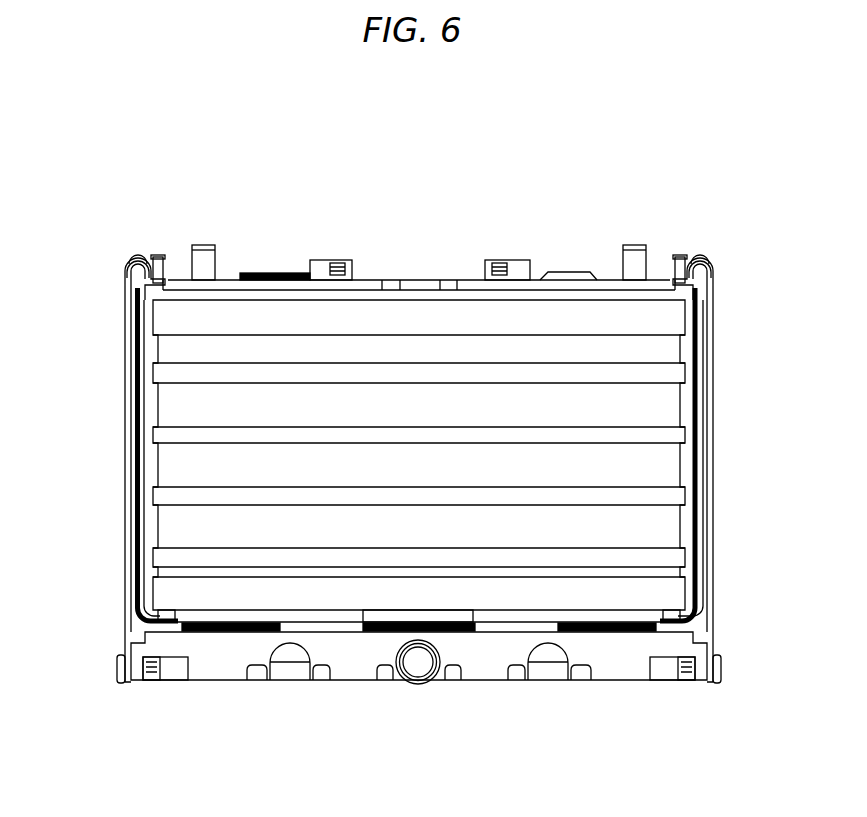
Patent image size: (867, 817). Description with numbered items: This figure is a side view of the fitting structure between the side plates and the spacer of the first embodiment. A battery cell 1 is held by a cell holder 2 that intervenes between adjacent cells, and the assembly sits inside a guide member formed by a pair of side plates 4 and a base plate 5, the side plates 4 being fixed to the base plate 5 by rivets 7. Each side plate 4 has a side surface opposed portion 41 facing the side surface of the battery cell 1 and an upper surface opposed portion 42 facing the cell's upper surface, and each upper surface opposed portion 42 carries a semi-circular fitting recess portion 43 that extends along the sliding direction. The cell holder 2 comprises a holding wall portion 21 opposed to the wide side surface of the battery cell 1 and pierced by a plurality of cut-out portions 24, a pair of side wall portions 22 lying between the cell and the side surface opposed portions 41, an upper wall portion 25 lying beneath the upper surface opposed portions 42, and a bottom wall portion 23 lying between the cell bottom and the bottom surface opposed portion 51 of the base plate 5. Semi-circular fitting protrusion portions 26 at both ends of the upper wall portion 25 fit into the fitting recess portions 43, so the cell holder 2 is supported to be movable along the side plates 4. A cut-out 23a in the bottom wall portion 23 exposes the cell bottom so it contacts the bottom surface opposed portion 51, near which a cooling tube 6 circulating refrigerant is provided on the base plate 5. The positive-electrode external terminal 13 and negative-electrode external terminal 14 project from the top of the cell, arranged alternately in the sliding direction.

The battery cell 1 is at (567, 276).
The cell holder 2 is at (467, 278).
The side plate 4 is at (122, 348).
The base plate 5 is at (618, 672).
The cooling tube 6 is at (420, 686).
The rivet 7 is at (116, 668).
The positive-electrode external terminal 13 is at (607, 278).
The negative-electrode external terminal 14 is at (230, 276).
The holding wall portion 21 is at (415, 455).
The side wall portion 22 is at (136, 380).
The bottom wall portion 23 is at (667, 662).
The cut-out 23a is at (543, 630).
The cut-out portion 24 is at (697, 345).
The upper wall portion 25 is at (367, 278).
The fitting protrusion portion 26 is at (126, 272).
The side surface opposed portion 41 is at (125, 462).
The upper surface opposed portion 42 is at (140, 258).
The fitting recess portion 43 is at (152, 290).
The bottom surface opposed portion 51 is at (348, 635).